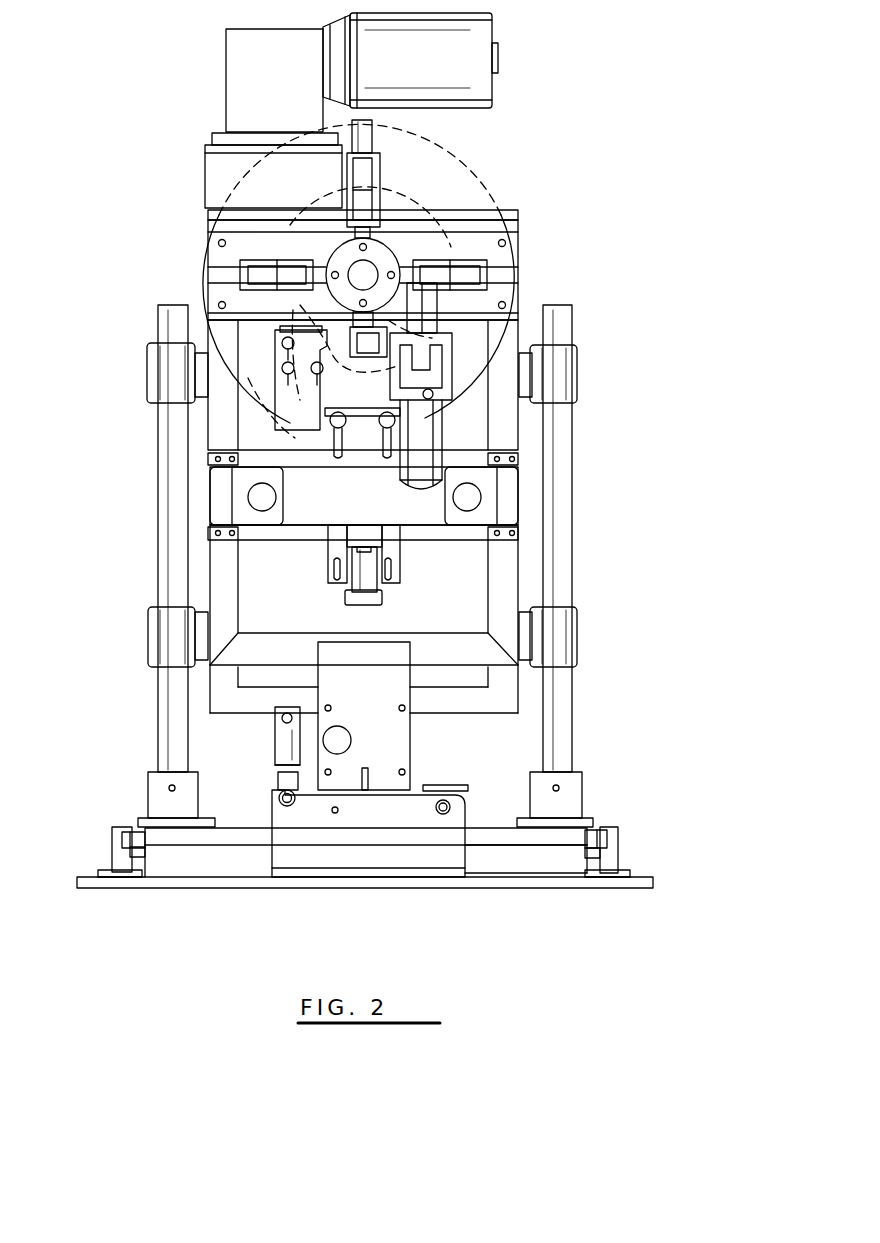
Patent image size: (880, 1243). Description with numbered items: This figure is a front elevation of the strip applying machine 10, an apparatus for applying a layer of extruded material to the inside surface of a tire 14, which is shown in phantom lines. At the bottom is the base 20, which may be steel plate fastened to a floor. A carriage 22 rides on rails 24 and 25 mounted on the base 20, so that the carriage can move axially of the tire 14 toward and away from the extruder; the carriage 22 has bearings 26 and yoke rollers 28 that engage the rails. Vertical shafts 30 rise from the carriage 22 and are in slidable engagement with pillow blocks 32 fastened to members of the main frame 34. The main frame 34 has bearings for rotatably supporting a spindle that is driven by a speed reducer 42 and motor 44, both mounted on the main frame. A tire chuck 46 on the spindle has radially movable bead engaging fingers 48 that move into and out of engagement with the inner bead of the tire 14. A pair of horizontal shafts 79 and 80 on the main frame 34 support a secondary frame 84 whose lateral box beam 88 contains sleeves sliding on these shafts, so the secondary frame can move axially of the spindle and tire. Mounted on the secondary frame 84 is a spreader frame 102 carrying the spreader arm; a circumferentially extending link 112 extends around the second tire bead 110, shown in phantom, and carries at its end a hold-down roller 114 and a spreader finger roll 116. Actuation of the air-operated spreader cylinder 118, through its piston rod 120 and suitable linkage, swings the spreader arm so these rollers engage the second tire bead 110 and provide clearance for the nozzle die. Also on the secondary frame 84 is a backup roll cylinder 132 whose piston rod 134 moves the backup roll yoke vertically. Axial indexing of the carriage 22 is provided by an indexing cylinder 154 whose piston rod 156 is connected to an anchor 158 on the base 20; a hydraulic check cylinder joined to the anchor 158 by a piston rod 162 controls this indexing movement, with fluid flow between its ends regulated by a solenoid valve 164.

The strip applying machine 10 is at (160, 175).
The tire 14 is at (470, 167).
The base 20 is at (455, 880).
The carriage 22 is at (572, 832).
The rail 24 is at (113, 855).
The rail 25 is at (618, 852).
The bearings 26 is at (122, 838).
The yoke rollers 28 is at (142, 868).
The vertical shafts 30 is at (165, 413).
The pillow blocks 32 is at (160, 362).
The main frame 34 is at (503, 558).
The speed reducer 42 is at (242, 43).
The motor 44 is at (480, 30).
The tire chuck 46 is at (380, 163).
The bead engaging fingers 48 is at (255, 275).
The horizontal shaft 79 is at (278, 493).
The horizontal shaft 80 is at (472, 497).
The secondary frame 84 is at (238, 487).
The lateral box beam 88 is at (508, 484).
The spreader frame 102 is at (335, 537).
The second tire bead 110 is at (447, 230).
The circumferentially extending link 112 is at (318, 438).
The hold-down roller 114 is at (298, 320).
The spreader finger roll 116 is at (290, 397).
The spreader cylinder 118 is at (430, 437).
The piston rod 120 is at (420, 317).
The backup roll cylinder 132 is at (352, 580).
The piston rod 134 is at (372, 537).
The indexing cylinder 154 is at (445, 785).
The piston rod 156 is at (440, 808).
The anchor 158 is at (318, 852).
The piston rod 162 is at (296, 802).
The solenoid valve 164 is at (285, 740).